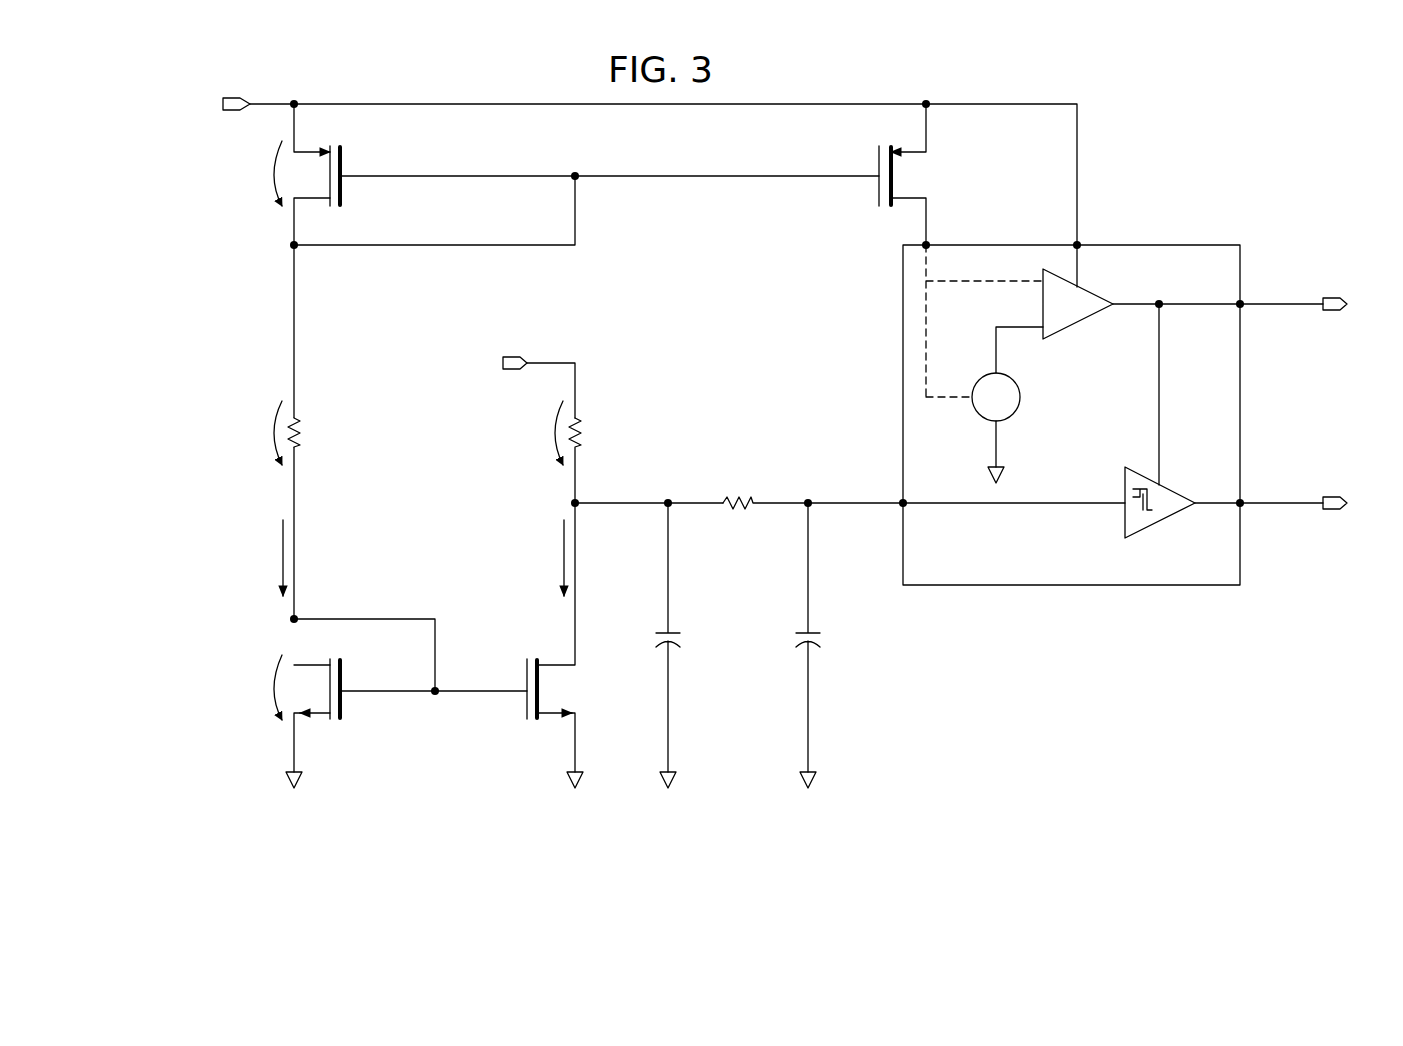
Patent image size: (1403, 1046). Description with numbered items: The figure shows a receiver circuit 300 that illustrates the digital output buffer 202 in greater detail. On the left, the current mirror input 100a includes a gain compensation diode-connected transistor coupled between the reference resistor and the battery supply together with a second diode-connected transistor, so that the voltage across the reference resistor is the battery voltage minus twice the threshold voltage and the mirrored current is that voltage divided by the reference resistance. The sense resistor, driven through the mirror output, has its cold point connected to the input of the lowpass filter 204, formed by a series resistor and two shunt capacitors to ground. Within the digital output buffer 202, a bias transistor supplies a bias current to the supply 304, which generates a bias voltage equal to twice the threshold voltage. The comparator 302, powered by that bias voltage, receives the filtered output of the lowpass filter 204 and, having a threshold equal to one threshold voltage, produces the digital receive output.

The circuit 300 is at (1232, 138).
The current mirror input 100a is at (422, 790).
The lowpass filter 204 is at (848, 800).
The digital output buffer 202 is at (1152, 612).
The comparator 302 is at (1162, 527).
The supply 304 is at (1048, 370).